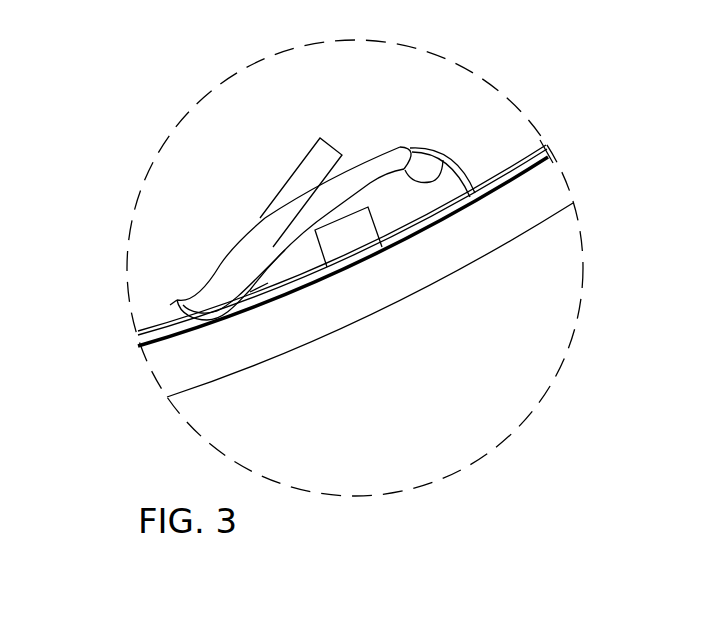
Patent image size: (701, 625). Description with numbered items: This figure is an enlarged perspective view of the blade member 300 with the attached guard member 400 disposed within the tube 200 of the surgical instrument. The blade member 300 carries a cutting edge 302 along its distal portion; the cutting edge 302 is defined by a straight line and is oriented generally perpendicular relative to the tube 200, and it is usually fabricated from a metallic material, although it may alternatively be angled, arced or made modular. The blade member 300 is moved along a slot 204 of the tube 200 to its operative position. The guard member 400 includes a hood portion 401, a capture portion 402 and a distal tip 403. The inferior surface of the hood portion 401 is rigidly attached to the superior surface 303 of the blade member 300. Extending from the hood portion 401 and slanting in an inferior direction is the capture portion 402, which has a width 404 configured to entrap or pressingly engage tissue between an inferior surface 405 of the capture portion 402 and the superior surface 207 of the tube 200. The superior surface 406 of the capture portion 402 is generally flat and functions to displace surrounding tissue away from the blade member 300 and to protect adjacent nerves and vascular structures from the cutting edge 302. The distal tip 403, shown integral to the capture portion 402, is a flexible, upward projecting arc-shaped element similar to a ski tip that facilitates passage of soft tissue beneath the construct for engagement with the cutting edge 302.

The tube 200 is at (185, 380).
The slot 204 is at (553, 163).
The superior surface of tube 207 is at (539, 140).
The blade member 300 is at (490, 104).
The cutting edge 302 is at (327, 267).
The superior surface of blade member 303 is at (443, 160).
The guard member 400 is at (218, 185).
The hood portion 401 is at (352, 188).
The capture portion 402 is at (220, 266).
The distal tip 403 is at (177, 303).
The width 404 is at (342, 156).
The inferior surface of capture portion 405 is at (258, 272).
The superior surface of capture portion 406 is at (260, 220).